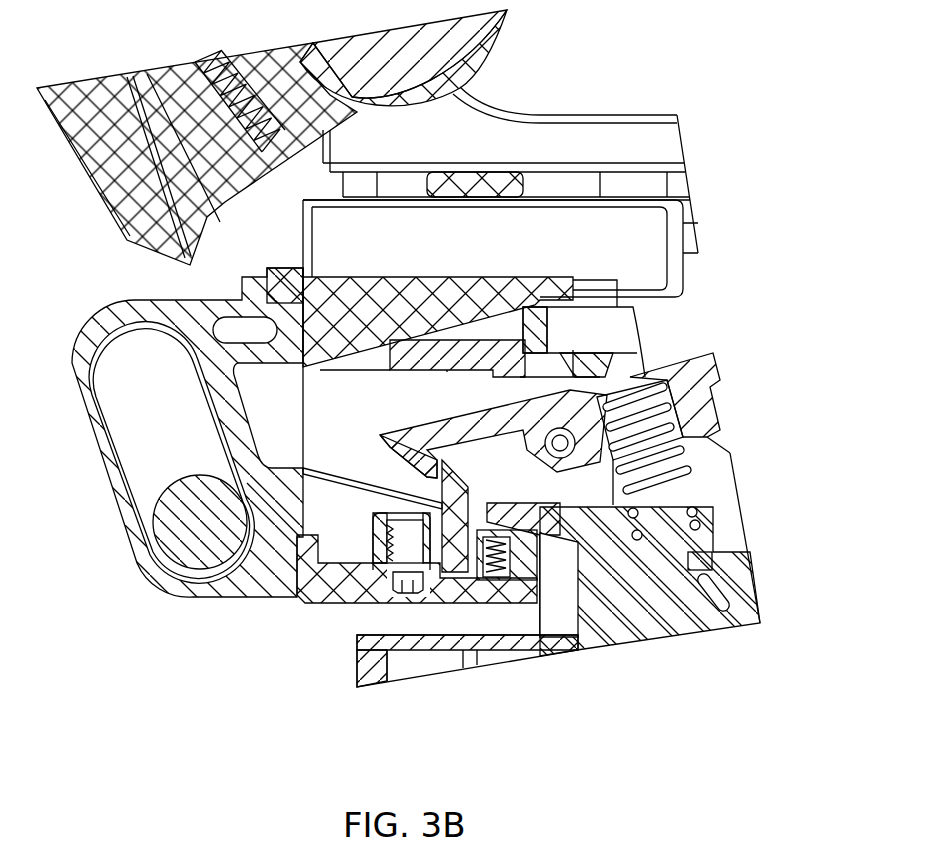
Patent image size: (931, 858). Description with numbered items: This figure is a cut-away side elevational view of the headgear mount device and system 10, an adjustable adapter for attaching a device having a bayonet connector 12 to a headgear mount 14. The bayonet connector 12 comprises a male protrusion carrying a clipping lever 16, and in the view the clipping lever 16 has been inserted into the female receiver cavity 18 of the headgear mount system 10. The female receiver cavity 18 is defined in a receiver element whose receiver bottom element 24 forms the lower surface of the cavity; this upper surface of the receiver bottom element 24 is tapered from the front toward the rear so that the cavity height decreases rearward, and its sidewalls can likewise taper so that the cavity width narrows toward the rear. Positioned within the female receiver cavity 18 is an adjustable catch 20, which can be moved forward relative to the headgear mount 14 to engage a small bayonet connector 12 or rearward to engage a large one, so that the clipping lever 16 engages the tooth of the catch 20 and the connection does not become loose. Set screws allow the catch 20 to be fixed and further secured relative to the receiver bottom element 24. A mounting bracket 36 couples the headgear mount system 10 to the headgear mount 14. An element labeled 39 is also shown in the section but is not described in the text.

The headgear mount device and system 10 is at (313, 598).
The bayonet connector 12 is at (700, 368).
The headgear mount 14 is at (650, 150).
The clipping lever 16 is at (397, 445).
The female receiver cavity 18 is at (325, 438).
The adjustable catch 20 is at (445, 545).
The receiver bottom element 24 is at (313, 590).
The mounting bracket 36 is at (403, 540).
The plate 39 is at (533, 580).